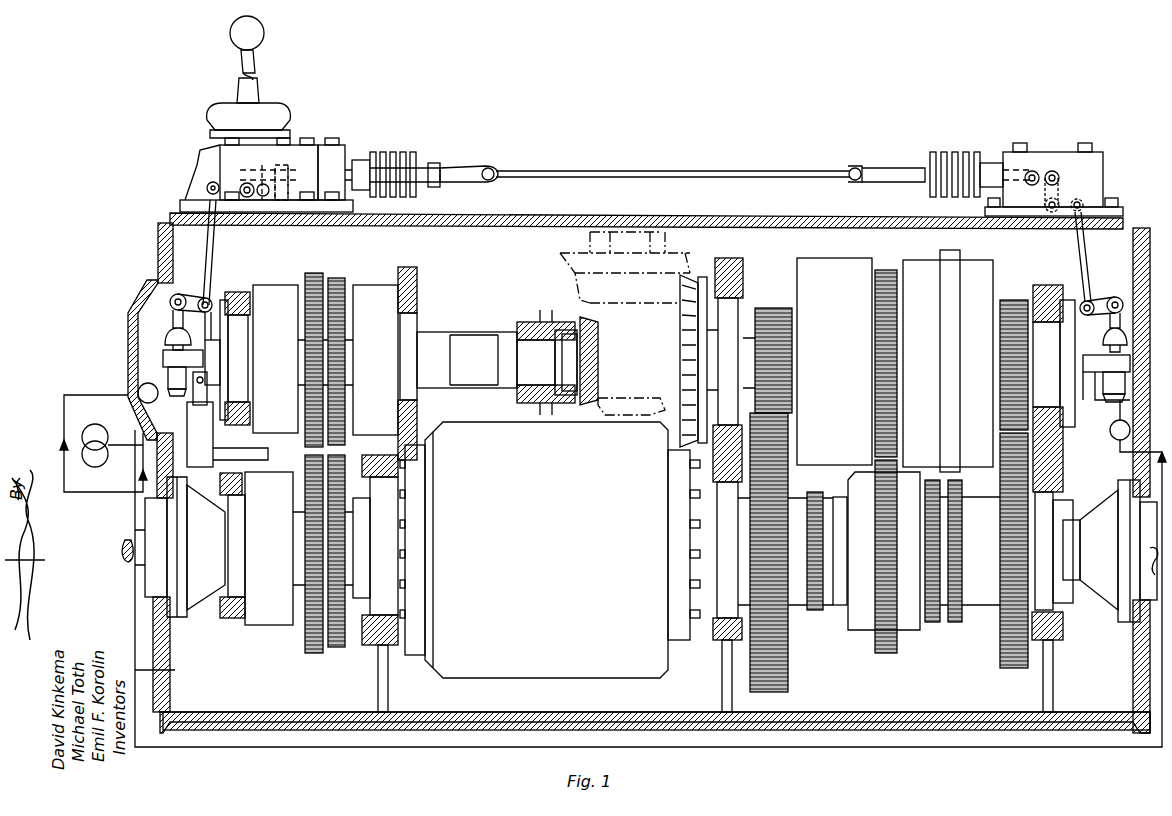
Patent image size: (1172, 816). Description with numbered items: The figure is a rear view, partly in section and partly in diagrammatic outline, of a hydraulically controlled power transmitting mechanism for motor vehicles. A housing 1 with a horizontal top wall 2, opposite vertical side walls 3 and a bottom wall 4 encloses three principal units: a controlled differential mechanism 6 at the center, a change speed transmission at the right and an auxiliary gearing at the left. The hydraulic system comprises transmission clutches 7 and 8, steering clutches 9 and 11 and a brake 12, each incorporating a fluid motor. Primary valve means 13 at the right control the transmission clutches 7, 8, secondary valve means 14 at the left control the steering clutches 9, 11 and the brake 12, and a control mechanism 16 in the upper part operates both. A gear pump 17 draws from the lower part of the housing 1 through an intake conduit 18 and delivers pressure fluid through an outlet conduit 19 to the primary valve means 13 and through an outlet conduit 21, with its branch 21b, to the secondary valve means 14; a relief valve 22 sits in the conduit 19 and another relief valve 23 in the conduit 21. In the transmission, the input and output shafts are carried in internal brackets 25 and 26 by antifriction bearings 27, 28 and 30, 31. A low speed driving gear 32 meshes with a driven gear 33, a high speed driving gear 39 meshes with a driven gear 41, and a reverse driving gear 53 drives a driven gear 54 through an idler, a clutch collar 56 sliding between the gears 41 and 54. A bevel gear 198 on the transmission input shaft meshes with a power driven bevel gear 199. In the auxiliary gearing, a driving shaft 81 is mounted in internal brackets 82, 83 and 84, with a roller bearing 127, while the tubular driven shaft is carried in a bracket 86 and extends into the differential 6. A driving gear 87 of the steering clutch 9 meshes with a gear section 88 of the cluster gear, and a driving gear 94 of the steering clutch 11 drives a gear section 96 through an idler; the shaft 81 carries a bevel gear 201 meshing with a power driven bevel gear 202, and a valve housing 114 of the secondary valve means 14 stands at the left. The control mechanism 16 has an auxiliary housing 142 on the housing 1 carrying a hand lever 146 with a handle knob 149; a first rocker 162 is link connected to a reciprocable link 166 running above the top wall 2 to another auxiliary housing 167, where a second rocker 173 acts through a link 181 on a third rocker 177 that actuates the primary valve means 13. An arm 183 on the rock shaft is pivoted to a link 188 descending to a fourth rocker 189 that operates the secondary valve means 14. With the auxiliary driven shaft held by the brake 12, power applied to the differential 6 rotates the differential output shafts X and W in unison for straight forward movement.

The housing 1 is at (727, 208).
The top wall 2 is at (476, 231).
The side walls 3 is at (160, 246).
The bottom wall 4 is at (443, 712).
The controlled differential mechanism 6 is at (550, 550).
The transmission clutch 7 is at (834, 361).
The transmission clutch 8 is at (948, 361).
The steering clutch 9 is at (279, 359).
The steering clutch 11 is at (371, 360).
The brake 12 is at (266, 548).
The primary valve means 13 is at (1090, 384).
The secondary valve means 14 is at (163, 360).
The control mechanism 16 is at (290, 122).
The gear pump 17 is at (104, 451).
The intake conduit 18 is at (178, 668).
The outlet conduit 19 is at (88, 492).
The outlet conduit 21 is at (64, 400).
The fluid passage 21b is at (172, 416).
The relief valve 22 is at (1113, 442).
The relief valve 23 is at (138, 392).
The internal bracket 25 is at (1050, 284).
The internal bracket 26 is at (742, 252).
The antifriction bearing 27 is at (1056, 392).
The antifriction bearing 28 is at (740, 305).
The antifriction bearing 30 is at (1056, 498).
The antifriction bearing 31 is at (728, 532).
The driving gear 32 is at (782, 312).
The driven gear 33 is at (789, 685).
The driving gear 39 is at (882, 270).
The driven gear 41 is at (880, 653).
The driving gear 53 is at (1010, 300).
The driven gear 54 is at (1012, 668).
The clutch collar 56 is at (934, 622).
The driving shaft 81 is at (473, 340).
The internal bracket 82 is at (528, 322).
The internal bracket 83 is at (418, 292).
The internal bracket 84 is at (249, 292).
The internal bracket 86 is at (222, 618).
The driving gear 87 is at (316, 273).
The gear section 88 is at (312, 653).
The driving gear 94 is at (340, 278).
The gear section 96 is at (337, 647).
The valve housing 114 is at (198, 468).
The roller bearing 127 is at (557, 362).
The auxiliary housing 142 is at (196, 172).
The hand lever 146 is at (258, 92).
The handle knob 149 is at (264, 36).
The first rocker 162 is at (268, 184).
The reciprocable link 166 is at (588, 174).
The auxiliary housing 167 is at (1103, 176).
The second rocker 173 is at (1056, 199).
The third rocker 177 is at (1108, 302).
The link 181 is at (1080, 252).
The arm 183 is at (240, 190).
The link 188 is at (206, 252).
The fourth rocker 189 is at (172, 318).
The bevel gear 198 is at (680, 360).
The power driven bevel gear 199 is at (570, 280).
The bevel gear 201 is at (600, 345).
The power driven bevel gear 202 is at (628, 404).
The differential output shaft W is at (128, 540).
The differential output shaft X is at (1152, 565).